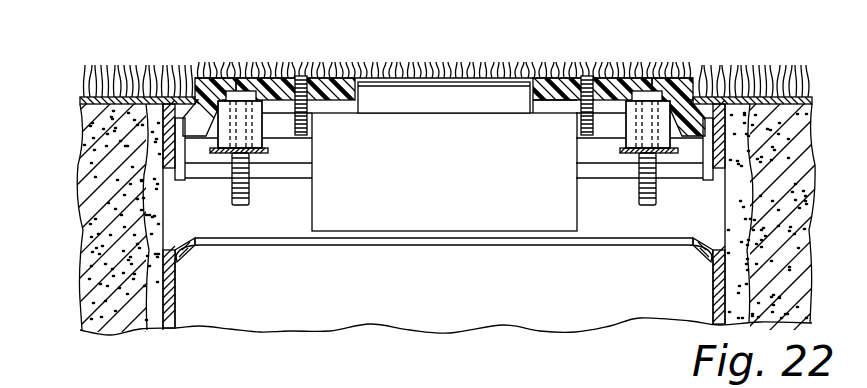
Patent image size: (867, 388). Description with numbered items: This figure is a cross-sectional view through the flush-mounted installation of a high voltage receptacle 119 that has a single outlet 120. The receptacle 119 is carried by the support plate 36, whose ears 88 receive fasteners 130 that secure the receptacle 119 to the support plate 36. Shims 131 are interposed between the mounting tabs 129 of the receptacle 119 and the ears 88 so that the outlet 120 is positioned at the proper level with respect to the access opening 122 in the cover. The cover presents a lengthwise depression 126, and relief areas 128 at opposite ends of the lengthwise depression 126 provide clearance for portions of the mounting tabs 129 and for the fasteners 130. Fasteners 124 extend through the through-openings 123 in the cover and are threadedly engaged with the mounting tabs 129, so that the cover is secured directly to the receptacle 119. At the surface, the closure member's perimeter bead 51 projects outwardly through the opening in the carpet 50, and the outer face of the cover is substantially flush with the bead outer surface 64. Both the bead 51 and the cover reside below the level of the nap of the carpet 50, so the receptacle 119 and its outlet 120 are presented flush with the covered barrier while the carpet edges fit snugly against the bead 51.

The carpet 50 is at (82, 98).
The perimeter bead 51 is at (193, 96).
The bead outer surface 64 is at (208, 76).
The fasteners 124 is at (228, 76).
The through-openings 123 is at (283, 76).
The access opening 122 is at (358, 93).
The outlet 120 is at (437, 96).
The lengthwise depression 126 is at (568, 97).
The relief areas 128 is at (692, 100).
The mounting tabs 129 is at (263, 140).
The shims 131 is at (263, 150).
The ears 88 is at (228, 155).
The fasteners 130 is at (248, 188).
The support plate 36 is at (716, 170).
The high voltage receptacle 119 is at (450, 212).